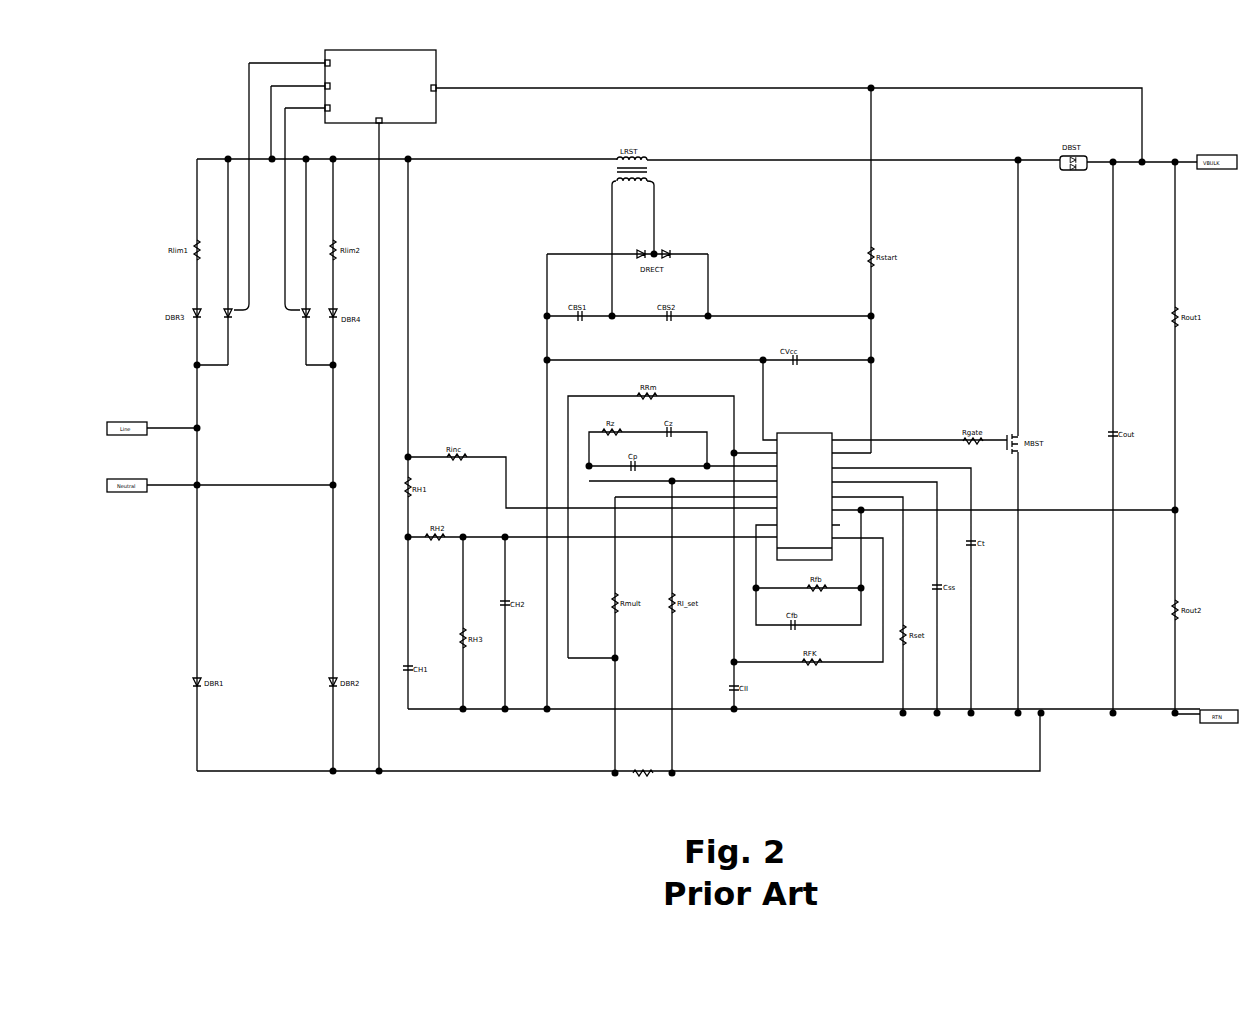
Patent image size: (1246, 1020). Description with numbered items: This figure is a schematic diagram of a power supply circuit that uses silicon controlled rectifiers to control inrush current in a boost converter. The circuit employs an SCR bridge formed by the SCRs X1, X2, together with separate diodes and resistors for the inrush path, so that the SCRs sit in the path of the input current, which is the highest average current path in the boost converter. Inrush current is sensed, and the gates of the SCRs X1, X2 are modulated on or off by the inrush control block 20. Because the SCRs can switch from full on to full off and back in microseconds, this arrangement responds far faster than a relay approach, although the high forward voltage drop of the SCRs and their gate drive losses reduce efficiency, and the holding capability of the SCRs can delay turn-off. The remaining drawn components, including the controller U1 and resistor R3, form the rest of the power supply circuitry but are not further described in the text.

The inrush control block 20 is at (425, 79).
The power factor controller UC3854 U1 is at (804, 491).
The silicon controlled rectifier X1 is at (218, 315).
The silicon controlled rectifier X2 is at (311, 315).
The resistor R3 is at (643, 767).